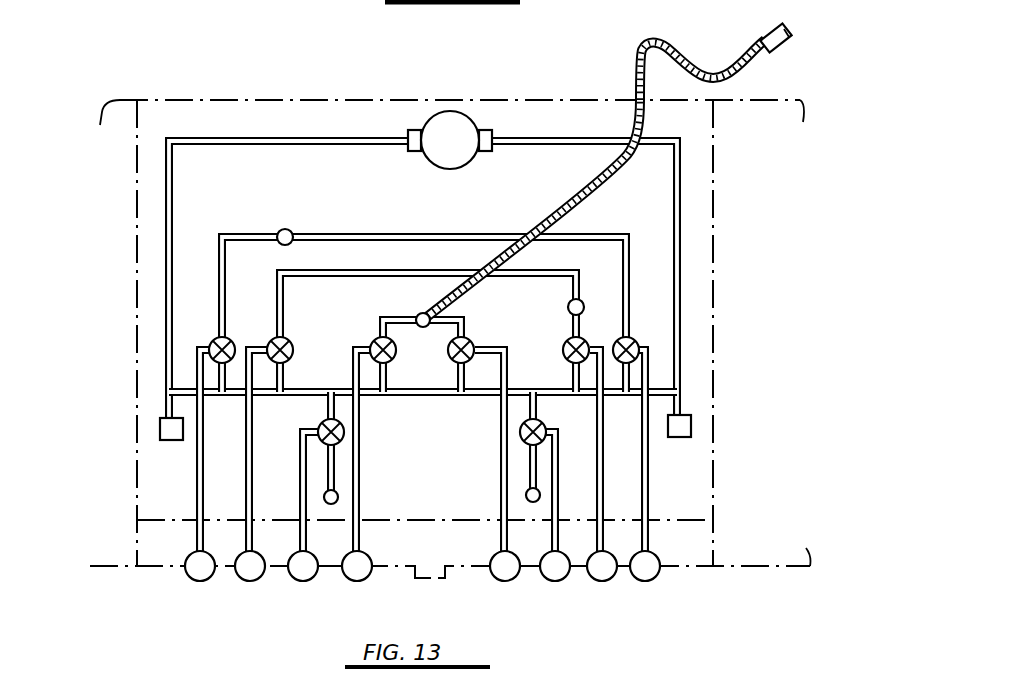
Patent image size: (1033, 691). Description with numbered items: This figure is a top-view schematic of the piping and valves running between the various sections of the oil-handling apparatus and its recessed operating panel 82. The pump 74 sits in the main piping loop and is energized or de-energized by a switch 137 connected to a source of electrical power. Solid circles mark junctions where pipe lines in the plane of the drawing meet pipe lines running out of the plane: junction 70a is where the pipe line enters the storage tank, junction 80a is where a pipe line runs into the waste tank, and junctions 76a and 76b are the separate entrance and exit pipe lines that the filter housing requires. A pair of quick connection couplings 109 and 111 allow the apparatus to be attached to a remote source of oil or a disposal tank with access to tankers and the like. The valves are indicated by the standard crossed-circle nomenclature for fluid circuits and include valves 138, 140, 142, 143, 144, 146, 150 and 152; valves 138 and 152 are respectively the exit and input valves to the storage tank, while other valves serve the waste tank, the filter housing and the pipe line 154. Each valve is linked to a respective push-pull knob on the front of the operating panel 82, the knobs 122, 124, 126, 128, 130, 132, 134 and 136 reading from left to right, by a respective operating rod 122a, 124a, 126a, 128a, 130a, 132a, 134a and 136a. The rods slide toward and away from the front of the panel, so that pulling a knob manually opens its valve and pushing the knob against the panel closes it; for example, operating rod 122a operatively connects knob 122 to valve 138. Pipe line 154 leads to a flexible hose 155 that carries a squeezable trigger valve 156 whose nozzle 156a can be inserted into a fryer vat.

The pump 74 is at (450, 111).
The junction 70a is at (290, 230).
The junction 80a is at (568, 307).
The junction 76a is at (338, 496).
The junction 76b is at (526, 495).
The operating panel 82 is at (692, 562).
The quick connection coupling 109 is at (160, 428).
The quick connection coupling 111 is at (692, 424).
The push-pull knob 122 is at (192, 578).
The push-pull knob 124 is at (245, 579).
The push-pull knob 126 is at (302, 580).
The push-pull knob 128 is at (357, 581).
The push-pull knob 130 is at (504, 581).
The push-pull knob 132 is at (560, 580).
The push-pull knob 134 is at (602, 581).
The push-pull knob 136 is at (655, 578).
The operating rod 122a is at (197, 458).
The operating rod 124a is at (247, 482).
The operating rod 126a is at (300, 508).
The operating rod 128a is at (360, 456).
The operating rod 130a is at (500, 419).
The operating rod 132a is at (557, 506).
The operating rod 134a is at (603, 482).
The operating rod 136a is at (647, 468).
The switch 137 is at (418, 579).
The valve 138 is at (229, 340).
The valve 140 is at (290, 340).
The valve 142 is at (318, 431).
The indicator lamp 143 is at (544, 428).
The valve 144 is at (371, 343).
The valve 146 is at (452, 359).
The valve 150 is at (566, 341).
The valve 152 is at (639, 341).
The pipe line 154 is at (562, 208).
The flexible hose 155 is at (672, 62).
The squeezable trigger valve 156 is at (786, 48).
The nozzle 156a is at (786, 32).